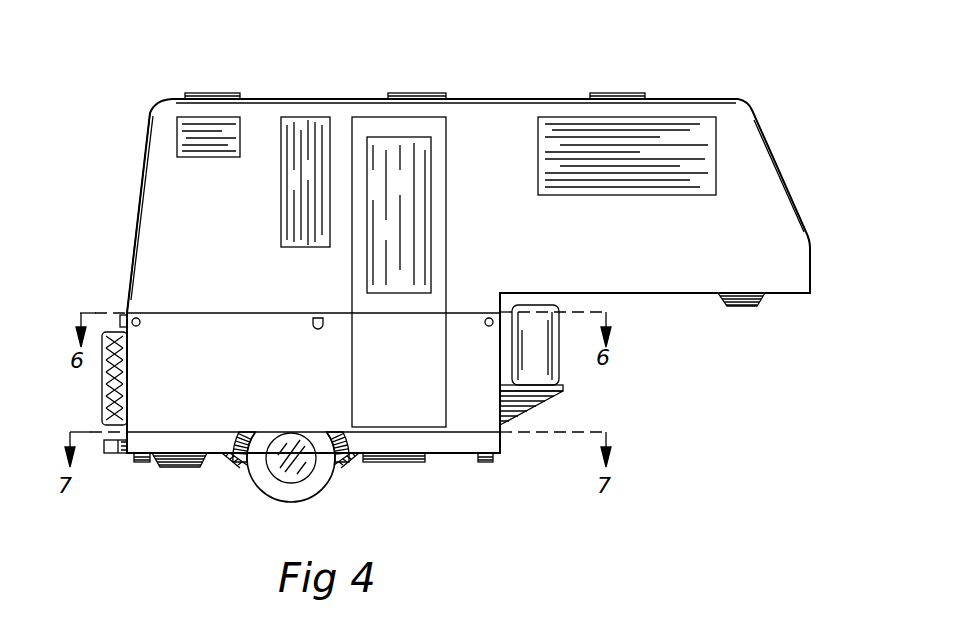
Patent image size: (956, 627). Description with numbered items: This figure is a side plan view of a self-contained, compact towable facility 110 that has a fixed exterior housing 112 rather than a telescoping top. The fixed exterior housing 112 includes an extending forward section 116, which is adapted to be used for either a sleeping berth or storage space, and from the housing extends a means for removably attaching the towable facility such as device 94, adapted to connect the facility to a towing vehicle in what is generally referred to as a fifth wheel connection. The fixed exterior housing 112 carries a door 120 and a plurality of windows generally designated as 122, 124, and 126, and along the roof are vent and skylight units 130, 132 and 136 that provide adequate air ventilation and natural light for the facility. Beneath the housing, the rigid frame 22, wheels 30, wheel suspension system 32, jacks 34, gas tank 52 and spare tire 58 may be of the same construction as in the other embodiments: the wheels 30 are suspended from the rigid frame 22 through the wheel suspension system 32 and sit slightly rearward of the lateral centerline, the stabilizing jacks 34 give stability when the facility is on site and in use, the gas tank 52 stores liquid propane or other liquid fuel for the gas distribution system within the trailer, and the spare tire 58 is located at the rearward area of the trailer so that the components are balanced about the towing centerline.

The self-contained, compact towable facility 110 is at (782, 136).
The fixed exterior housing 112 is at (133, 238).
The extending forward section 116 is at (665, 294).
The door 120 is at (446, 235).
The window 122 is at (655, 195).
The window 124 is at (281, 215).
The window 126 is at (200, 159).
The vent and skylight unit 130 is at (621, 92).
The vent and skylight unit 132 is at (428, 92).
The roof vent 136 is at (219, 92).
The means for removably attaching the towable facility 94 is at (745, 303).
The gas tank 52 is at (560, 368).
The spare tire 58 is at (100, 385).
The wheels 30 is at (330, 487).
The wheel suspension system 32 is at (237, 465).
The rigid frame 22 is at (440, 456).
The stabilizing jacks 34 is at (140, 463).